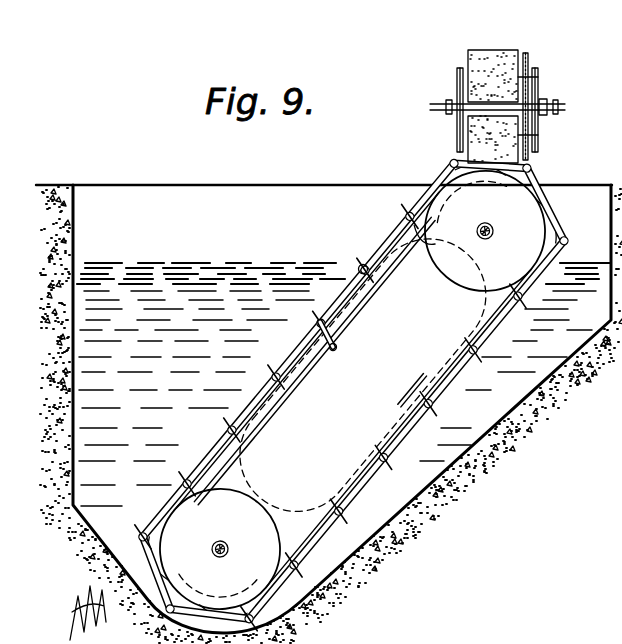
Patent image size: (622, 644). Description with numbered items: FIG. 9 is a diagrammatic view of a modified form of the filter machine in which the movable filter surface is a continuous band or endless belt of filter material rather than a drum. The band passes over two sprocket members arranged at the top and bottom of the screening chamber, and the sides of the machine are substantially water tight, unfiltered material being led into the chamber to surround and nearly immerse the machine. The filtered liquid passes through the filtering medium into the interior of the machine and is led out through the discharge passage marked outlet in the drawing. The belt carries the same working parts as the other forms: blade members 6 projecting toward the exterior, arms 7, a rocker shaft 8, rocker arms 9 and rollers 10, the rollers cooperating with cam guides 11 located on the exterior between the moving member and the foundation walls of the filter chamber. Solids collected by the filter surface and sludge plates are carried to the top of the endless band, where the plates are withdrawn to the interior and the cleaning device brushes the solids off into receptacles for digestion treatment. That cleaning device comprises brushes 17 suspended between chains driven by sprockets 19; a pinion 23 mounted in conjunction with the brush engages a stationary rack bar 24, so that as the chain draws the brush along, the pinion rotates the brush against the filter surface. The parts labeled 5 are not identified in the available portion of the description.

The frame side bars 5 is at (256, 397).
The blade members 6 is at (404, 219).
The arms 7 is at (395, 478).
The rocker shaft 8 is at (365, 275).
The rocker arms 9 is at (343, 329).
The rollers 10 is at (338, 346).
The cam guides 11 is at (392, 304).
The brushes 17 is at (488, 42).
The sprockets 19 is at (457, 90).
The pinion 23 is at (529, 60).
The rack bar 24 is at (547, 101).